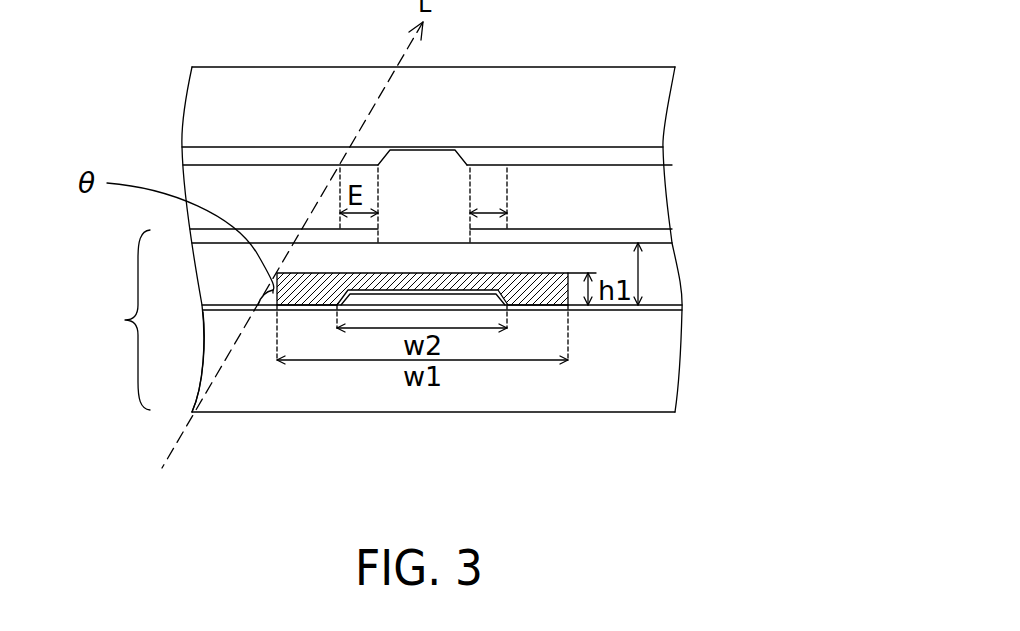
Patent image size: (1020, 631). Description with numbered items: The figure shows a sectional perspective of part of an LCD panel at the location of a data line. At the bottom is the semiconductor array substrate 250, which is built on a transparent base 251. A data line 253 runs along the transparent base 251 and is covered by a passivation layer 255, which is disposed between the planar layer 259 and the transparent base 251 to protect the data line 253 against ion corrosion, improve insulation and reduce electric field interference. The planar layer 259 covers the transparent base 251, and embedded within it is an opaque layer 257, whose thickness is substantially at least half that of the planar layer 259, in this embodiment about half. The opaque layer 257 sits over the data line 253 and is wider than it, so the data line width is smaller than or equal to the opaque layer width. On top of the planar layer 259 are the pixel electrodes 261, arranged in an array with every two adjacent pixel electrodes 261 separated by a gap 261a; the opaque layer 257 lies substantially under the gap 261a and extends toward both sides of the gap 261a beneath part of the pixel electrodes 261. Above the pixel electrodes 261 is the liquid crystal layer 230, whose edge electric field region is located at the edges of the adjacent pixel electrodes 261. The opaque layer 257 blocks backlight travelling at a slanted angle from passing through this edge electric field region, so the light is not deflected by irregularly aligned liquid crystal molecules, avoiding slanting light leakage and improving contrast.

The liquid crystal layer 230 is at (653, 187).
The semiconductor array substrate 250 is at (111, 320).
The transparent base 251 is at (675, 367).
The data line 253 is at (472, 300).
The passivation layer 255 is at (653, 312).
The opaque layer 257 is at (434, 321).
The planar layer 259 is at (671, 297).
The pixel electrode 261 is at (665, 233).
The gap 261a is at (417, 218).